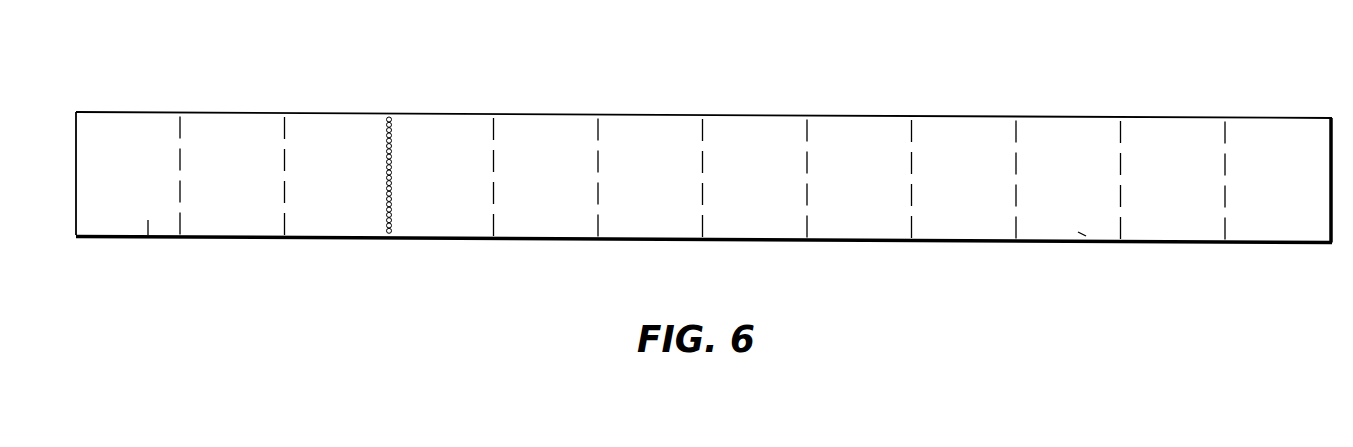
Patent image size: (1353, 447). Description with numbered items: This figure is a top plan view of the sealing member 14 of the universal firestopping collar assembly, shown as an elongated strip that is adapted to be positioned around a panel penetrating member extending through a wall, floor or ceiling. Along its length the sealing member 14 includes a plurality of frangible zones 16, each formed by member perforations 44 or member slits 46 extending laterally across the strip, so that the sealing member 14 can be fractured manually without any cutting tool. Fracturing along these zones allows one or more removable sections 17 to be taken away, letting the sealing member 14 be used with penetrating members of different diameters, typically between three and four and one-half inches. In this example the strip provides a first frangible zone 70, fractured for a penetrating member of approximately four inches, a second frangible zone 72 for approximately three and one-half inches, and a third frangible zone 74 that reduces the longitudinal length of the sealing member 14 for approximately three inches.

The sealing member 14 is at (763, 183).
The frangible zones 16 is at (383, 137).
The removable sections 17 is at (327, 220).
The member perforations 44 is at (393, 188).
The member slits 46 is at (700, 148).
The first frangible zone 70 is at (241, 168).
The second frangible zone 72 is at (339, 179).
The third frangible zone 74 is at (393, 213).